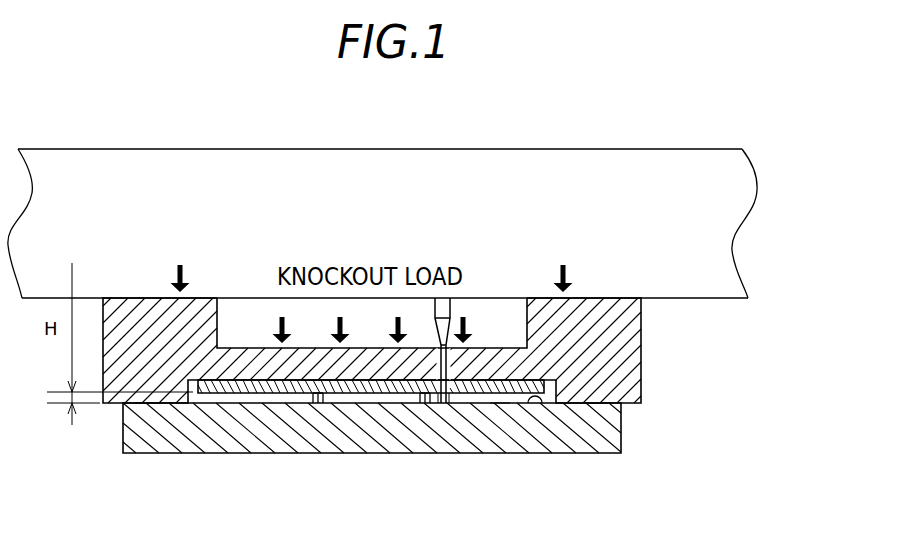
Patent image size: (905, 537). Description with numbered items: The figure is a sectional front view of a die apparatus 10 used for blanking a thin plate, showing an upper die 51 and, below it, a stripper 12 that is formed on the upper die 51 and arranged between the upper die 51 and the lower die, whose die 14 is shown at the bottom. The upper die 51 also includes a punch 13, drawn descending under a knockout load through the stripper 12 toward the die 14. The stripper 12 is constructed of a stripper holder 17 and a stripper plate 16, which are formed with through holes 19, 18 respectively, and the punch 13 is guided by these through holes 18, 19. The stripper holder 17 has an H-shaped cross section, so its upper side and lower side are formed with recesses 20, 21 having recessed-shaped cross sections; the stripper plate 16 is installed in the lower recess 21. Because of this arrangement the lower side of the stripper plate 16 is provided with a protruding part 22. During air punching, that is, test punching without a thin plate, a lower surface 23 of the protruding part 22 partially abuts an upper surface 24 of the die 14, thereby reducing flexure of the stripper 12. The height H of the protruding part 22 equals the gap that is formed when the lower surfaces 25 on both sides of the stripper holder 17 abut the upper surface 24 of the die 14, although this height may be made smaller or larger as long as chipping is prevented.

The die apparatus 10 is at (738, 121).
The stripper 12 is at (711, 303).
The punch 13 is at (443, 307).
The die 14 is at (467, 443).
The stripper plate 16 is at (545, 381).
The stripper holder 17 is at (626, 316).
The through hole 18 is at (443, 403).
The through hole 19 is at (447, 368).
The recess 20 is at (247, 302).
The recess 21 is at (504, 412).
The protruding part 22 is at (382, 403).
The lower surface 23 is at (423, 403).
The upper surface 24 is at (542, 403).
The lower surfaces 25 is at (150, 470).
The upper die 51 is at (117, 170).